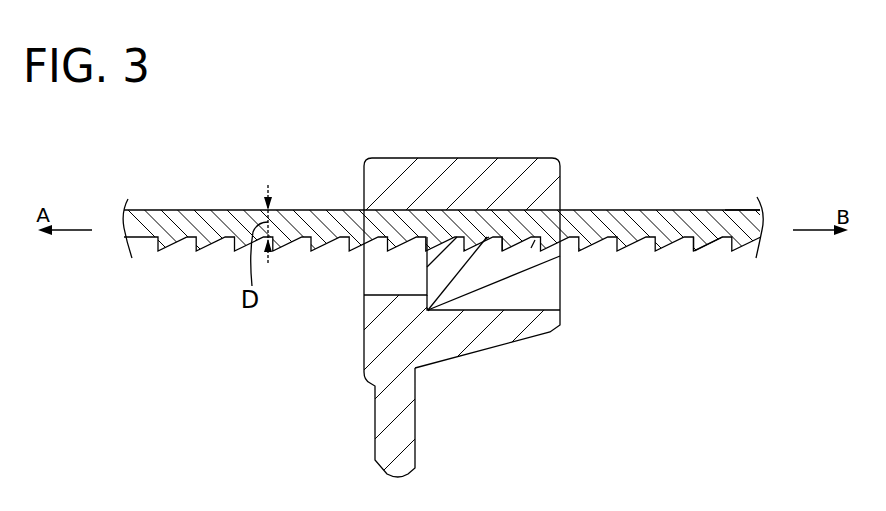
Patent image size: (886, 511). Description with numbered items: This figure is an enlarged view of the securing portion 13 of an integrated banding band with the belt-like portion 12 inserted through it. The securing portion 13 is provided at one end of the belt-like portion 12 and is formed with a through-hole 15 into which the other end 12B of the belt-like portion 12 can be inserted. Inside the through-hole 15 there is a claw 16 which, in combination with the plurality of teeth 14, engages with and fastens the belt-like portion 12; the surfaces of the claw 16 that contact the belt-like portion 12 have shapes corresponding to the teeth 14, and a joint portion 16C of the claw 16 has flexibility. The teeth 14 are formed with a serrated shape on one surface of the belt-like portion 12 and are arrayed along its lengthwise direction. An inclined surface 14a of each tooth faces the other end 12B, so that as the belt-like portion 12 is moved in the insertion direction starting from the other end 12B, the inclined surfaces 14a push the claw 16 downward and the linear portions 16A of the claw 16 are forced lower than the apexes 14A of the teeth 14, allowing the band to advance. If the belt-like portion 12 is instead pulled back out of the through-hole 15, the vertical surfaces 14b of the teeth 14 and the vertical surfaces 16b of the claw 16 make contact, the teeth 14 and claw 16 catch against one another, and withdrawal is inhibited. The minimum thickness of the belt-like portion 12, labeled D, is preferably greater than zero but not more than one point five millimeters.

The belt-like portion 12 is at (655, 209).
The other end of the belt-like portion 12B is at (730, 183).
The securing portion 13 is at (467, 157).
The teeth 14 is at (158, 254).
The apexes of the teeth 14A is at (512, 233).
The inclined surface 14a is at (706, 243).
The vertical surfaces of the teeth 14b is at (690, 241).
The through-hole 15 is at (350, 290).
The claw 16 is at (490, 264).
The linear portions of the claw 16A is at (537, 249).
The vertical surfaces of the claw 16b is at (493, 237).
The joint portion 16C is at (430, 316).